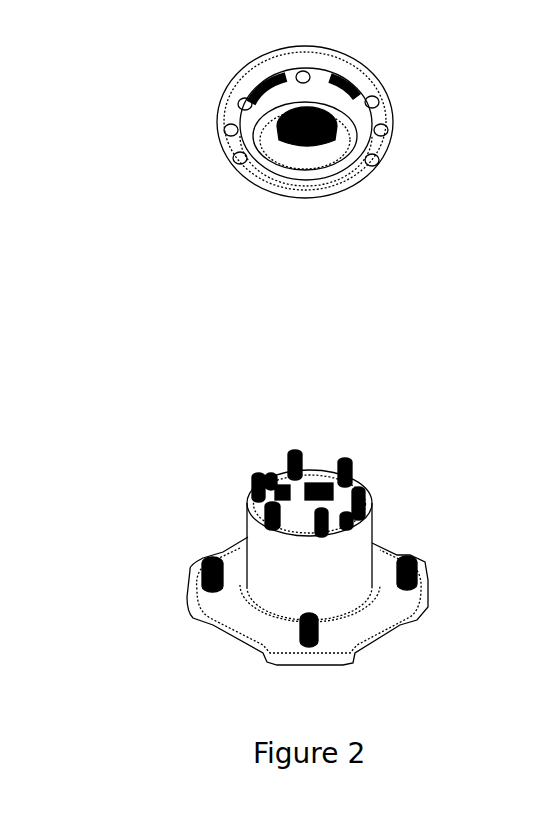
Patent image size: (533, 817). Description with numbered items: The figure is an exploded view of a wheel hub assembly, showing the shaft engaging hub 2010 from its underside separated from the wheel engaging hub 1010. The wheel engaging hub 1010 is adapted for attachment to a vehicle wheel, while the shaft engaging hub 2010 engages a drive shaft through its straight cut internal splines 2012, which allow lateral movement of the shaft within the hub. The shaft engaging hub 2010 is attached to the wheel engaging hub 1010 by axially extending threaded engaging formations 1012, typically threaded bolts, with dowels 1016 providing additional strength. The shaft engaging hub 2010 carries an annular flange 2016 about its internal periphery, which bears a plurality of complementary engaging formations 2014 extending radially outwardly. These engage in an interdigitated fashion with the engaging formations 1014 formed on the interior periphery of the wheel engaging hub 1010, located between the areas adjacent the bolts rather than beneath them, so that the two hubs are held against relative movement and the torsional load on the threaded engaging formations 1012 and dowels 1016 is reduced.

The wheel engaging hub 1010 is at (289, 541).
The axially extending threaded engaging formations 1012 is at (288, 465).
The engaging formations 1014 is at (358, 488).
The dowels 1016 is at (372, 518).
The shaft engaging hub 2010 is at (264, 149).
The internal splines 2012 is at (379, 166).
The complementary engaging formations 2014 is at (343, 98).
The annular flange 2016 is at (250, 112).